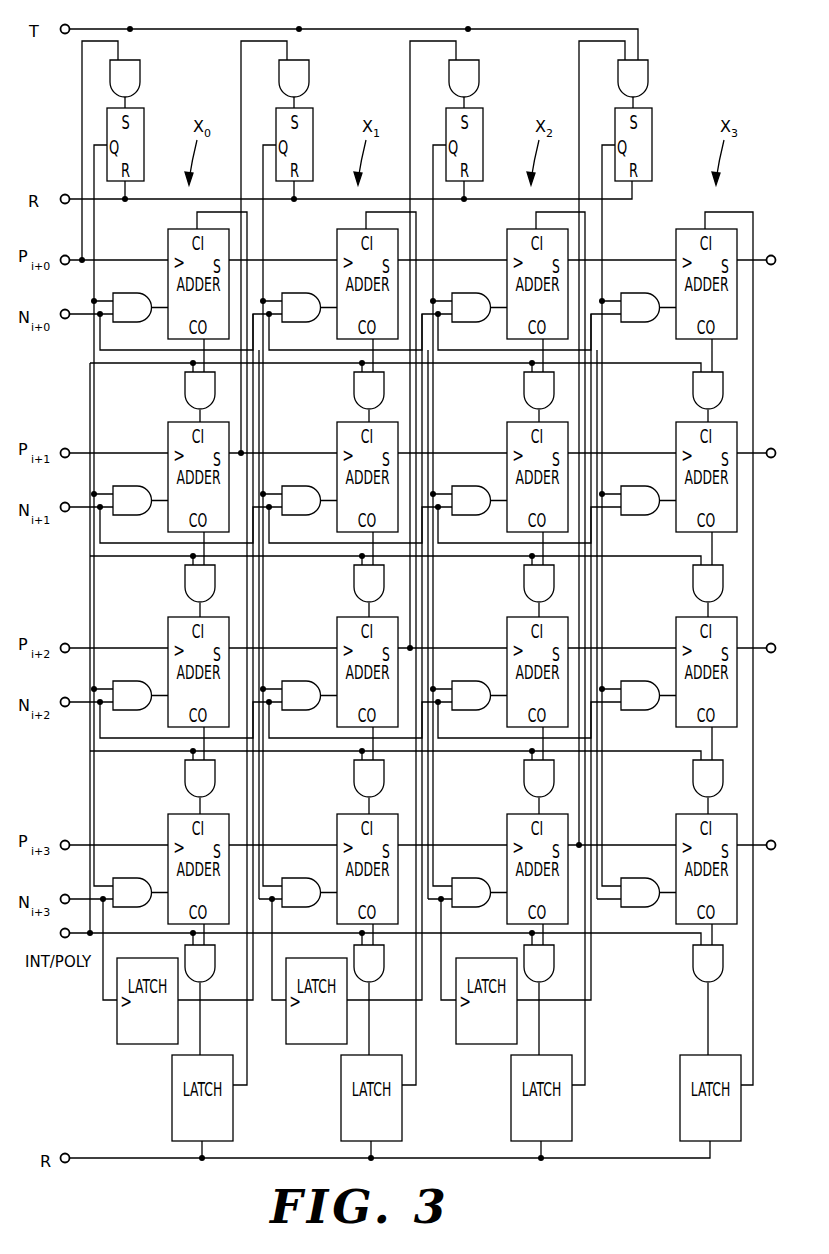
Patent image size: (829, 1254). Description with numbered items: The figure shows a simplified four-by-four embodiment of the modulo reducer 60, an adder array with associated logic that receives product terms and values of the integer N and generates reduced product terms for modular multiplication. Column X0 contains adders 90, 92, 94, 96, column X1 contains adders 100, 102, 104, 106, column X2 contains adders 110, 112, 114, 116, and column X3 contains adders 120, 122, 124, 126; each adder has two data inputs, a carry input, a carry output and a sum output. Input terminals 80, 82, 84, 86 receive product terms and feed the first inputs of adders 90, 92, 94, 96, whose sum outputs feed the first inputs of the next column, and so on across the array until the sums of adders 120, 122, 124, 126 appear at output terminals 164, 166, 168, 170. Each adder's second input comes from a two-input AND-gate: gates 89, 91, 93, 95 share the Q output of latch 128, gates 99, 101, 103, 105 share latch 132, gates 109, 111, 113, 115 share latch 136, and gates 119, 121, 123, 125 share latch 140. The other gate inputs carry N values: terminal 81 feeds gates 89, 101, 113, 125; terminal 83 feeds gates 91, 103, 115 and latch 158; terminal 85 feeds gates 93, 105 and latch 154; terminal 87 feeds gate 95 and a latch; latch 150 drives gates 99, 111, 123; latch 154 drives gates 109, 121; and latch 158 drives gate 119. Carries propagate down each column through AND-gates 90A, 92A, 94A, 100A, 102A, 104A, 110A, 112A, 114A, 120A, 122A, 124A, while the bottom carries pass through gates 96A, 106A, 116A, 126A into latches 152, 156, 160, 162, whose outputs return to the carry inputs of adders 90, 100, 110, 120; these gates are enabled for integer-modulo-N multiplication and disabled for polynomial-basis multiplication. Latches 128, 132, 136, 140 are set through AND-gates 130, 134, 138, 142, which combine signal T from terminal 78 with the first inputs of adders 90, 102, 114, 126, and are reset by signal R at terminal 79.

The modulo reducer 60 is at (522, 1214).
The terminal 78 is at (66, 36).
The terminal 79 is at (66, 193).
The input terminal 80 is at (66, 255).
The input terminal 81 is at (67, 309).
The input terminal 82 is at (66, 448).
The input terminal 83 is at (67, 502).
The input terminal 84 is at (66, 643).
The input terminal 85 is at (67, 697).
The input terminal 86 is at (66, 840).
The input terminal 87 is at (67, 894).
The AND-gate 89 is at (130, 323).
The adder 90 is at (168, 280).
The AND-gate 90A is at (185, 387).
The AND-gate 91 is at (130, 516).
The adder 92 is at (168, 473).
The AND-gate 92A is at (185, 580).
The AND-gate 93 is at (130, 711).
The adder 94 is at (168, 668).
The AND-gate 94A is at (185, 775).
The AND-gate 95 is at (130, 908).
The adder 96 is at (168, 865).
The AND-gate 96A is at (185, 950).
The AND-gate 99 is at (299, 323).
The adder 100 is at (337, 280).
The AND-gate 100A is at (354, 387).
The AND-gate 101 is at (299, 516).
The adder 102 is at (337, 473).
The AND-gate 102A is at (354, 580).
The AND-gate 103 is at (299, 711).
The adder 104 is at (337, 668).
The AND-gate 104A is at (354, 775).
The AND-gate 105 is at (299, 908).
The adder 106 is at (337, 865).
The AND-gate 106A is at (354, 950).
The AND-gate 109 is at (469, 323).
The adder 110 is at (507, 280).
The AND-gate 110A is at (524, 387).
The AND-gate 111 is at (469, 516).
The adder 112 is at (507, 473).
The AND-gate 112A is at (524, 580).
The AND-gate 113 is at (469, 711).
The adder 114 is at (507, 668).
The AND-gate 114A is at (524, 775).
The AND-gate 115 is at (469, 908).
The adder 116 is at (507, 865).
The AND-gate 116A is at (524, 950).
The AND-gate 119 is at (638, 323).
The adder 120 is at (676, 280).
The AND-gate 120A is at (693, 387).
The AND-gate 121 is at (638, 516).
The adder 122 is at (676, 473).
The AND-gate 122A is at (693, 580).
The AND-gate 123 is at (638, 711).
The adder 124 is at (676, 668).
The AND-gate 124A is at (693, 775).
The AND-gate 125 is at (638, 908).
The adder 126 is at (676, 865).
The AND-gate 126A is at (693, 961).
The latch 128 is at (144, 121).
The AND-gate 130 is at (141, 76).
The latch 132 is at (313, 121).
The AND-gate 134 is at (310, 76).
The latch 136 is at (483, 121).
The AND-gate 138 is at (480, 76).
The latch 140 is at (652, 121).
The AND-gate 142 is at (649, 76).
The latch 150 is at (117, 1042).
The latch 152 is at (172, 1082).
The latch 154 is at (286, 1043).
The latch 156 is at (341, 1082).
The latch 158 is at (458, 1044).
The latch 160 is at (511, 1082).
The latch 162 is at (680, 1082).
The output terminal 164 is at (771, 255).
The output terminal 166 is at (771, 448).
The output terminal 168 is at (771, 643).
The output terminal 170 is at (771, 840).